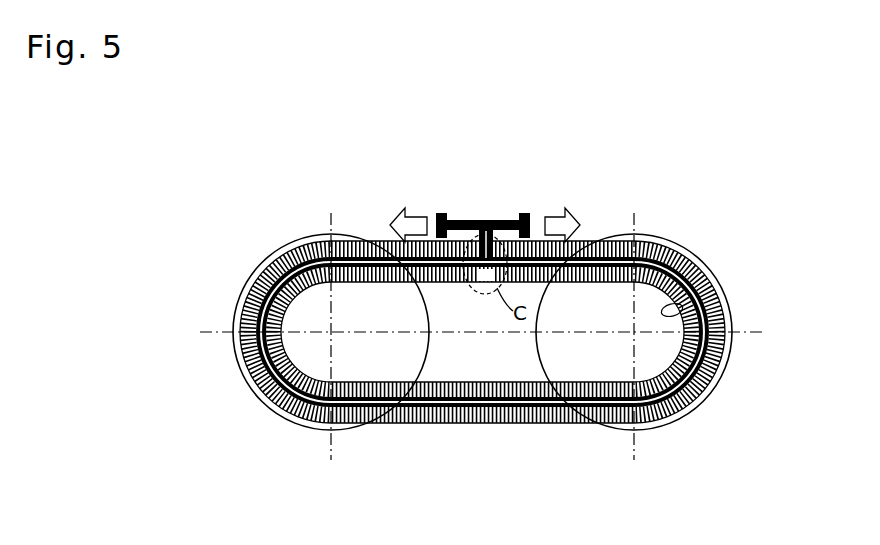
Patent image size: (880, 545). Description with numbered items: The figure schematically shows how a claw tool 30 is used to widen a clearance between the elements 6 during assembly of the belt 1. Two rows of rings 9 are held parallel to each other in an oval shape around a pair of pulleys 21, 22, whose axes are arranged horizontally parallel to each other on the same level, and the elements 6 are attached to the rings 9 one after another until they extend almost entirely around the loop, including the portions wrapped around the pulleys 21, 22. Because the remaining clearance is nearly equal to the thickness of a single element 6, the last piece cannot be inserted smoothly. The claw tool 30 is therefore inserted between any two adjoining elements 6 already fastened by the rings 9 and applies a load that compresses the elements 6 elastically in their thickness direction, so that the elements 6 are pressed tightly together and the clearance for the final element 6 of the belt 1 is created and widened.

The belt 1 is at (477, 379).
The element 6 is at (673, 250).
The ring 9 is at (683, 316).
The pulley 21 is at (265, 407).
The pulley 22 is at (700, 410).
The claw tool 30 is at (504, 221).